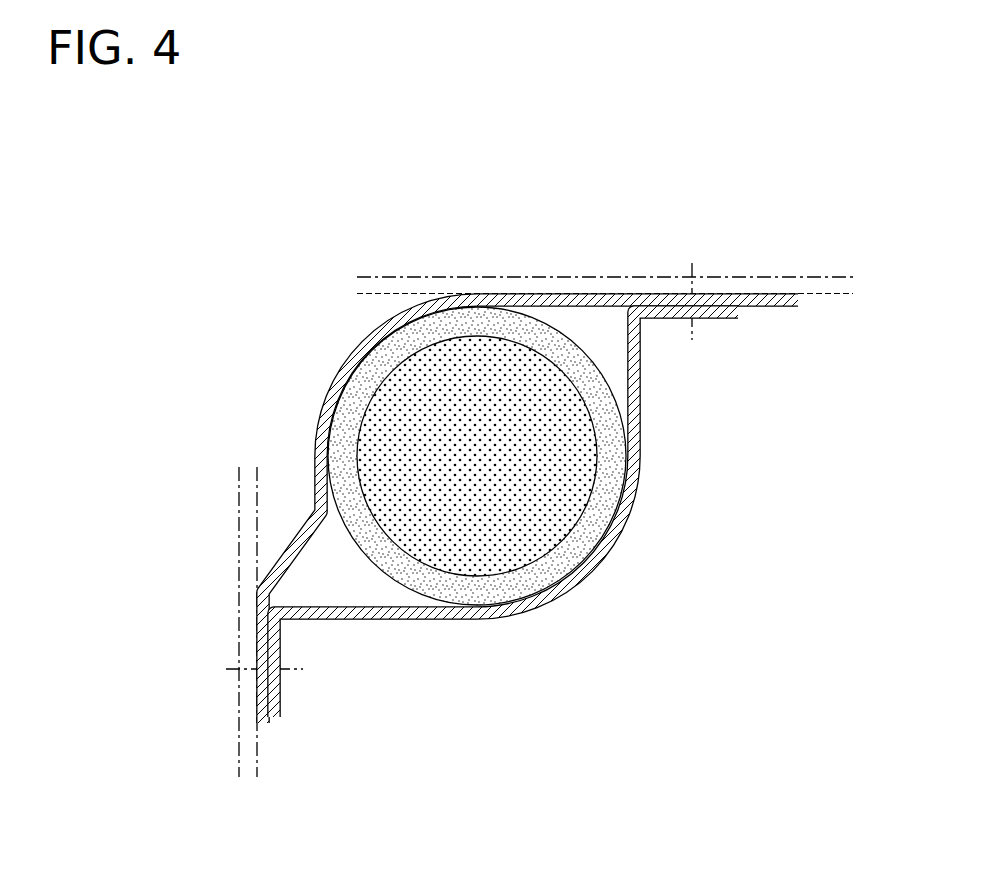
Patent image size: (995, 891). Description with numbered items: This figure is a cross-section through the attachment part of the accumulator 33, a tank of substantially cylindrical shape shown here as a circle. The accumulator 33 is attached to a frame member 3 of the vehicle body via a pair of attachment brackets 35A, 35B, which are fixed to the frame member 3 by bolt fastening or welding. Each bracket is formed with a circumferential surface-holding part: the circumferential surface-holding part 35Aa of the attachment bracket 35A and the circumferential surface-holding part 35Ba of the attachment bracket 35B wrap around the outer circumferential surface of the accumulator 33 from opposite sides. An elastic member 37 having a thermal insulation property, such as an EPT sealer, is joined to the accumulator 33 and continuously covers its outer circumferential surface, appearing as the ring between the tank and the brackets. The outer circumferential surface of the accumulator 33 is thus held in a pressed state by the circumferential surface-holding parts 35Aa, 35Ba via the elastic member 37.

The frame member 3 is at (653, 277).
The accumulator 33 is at (434, 587).
The attachment bracket 35A is at (512, 514).
The circumferential surface-holding part 35Aa is at (621, 538).
The attachment bracket 35B is at (539, 497).
The circumferential surface-holding part 35Ba is at (350, 360).
The elastic member 37 is at (523, 594).